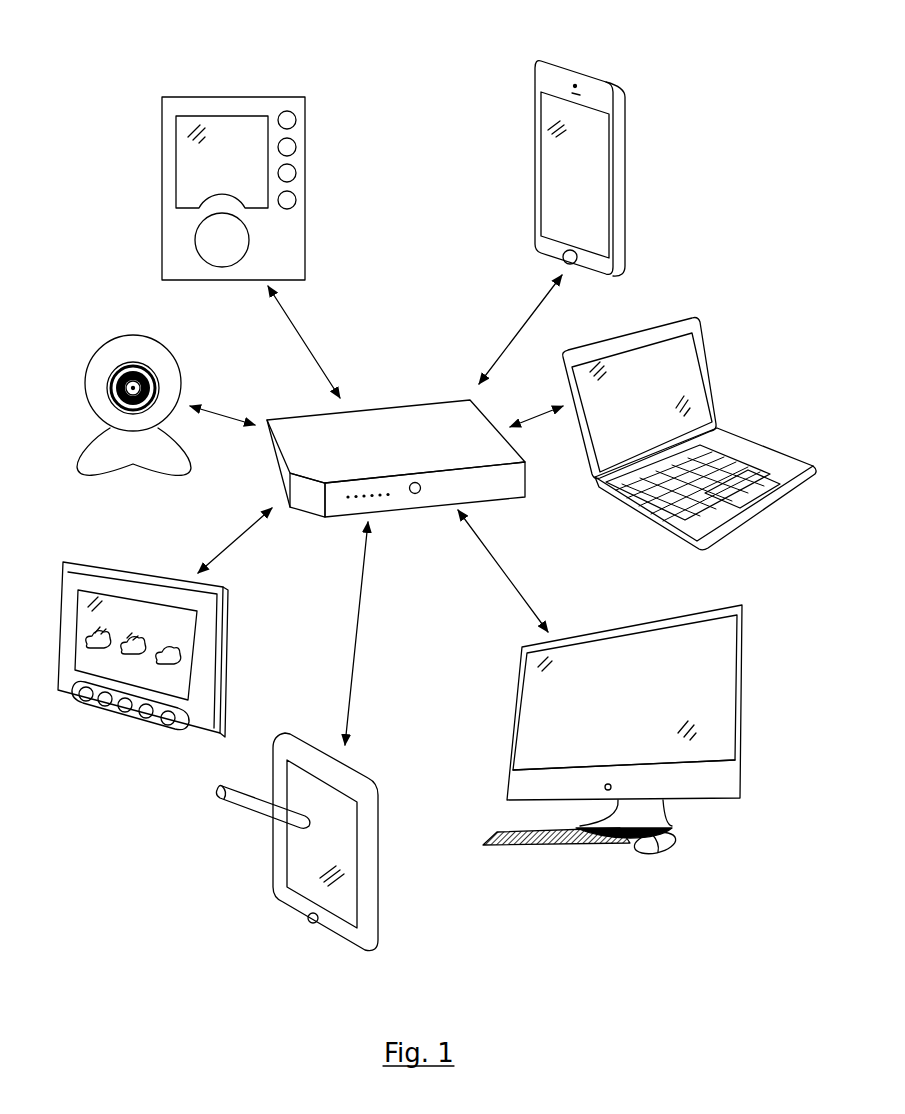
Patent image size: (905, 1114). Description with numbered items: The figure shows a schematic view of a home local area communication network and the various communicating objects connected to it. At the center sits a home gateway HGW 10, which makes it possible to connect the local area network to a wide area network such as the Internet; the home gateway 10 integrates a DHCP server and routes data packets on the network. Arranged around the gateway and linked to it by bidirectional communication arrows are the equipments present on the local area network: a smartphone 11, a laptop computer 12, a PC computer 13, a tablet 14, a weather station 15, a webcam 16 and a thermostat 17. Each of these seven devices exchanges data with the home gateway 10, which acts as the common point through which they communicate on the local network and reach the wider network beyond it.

The home gateway HGW 10 is at (388, 437).
The smartphone 11 is at (602, 98).
The laptop computer 12 is at (683, 355).
The PC computer 13 is at (690, 787).
The tablet 14 is at (278, 877).
The weather station 15 is at (157, 718).
The webcam 16 is at (114, 354).
The thermostat 17 is at (217, 105).